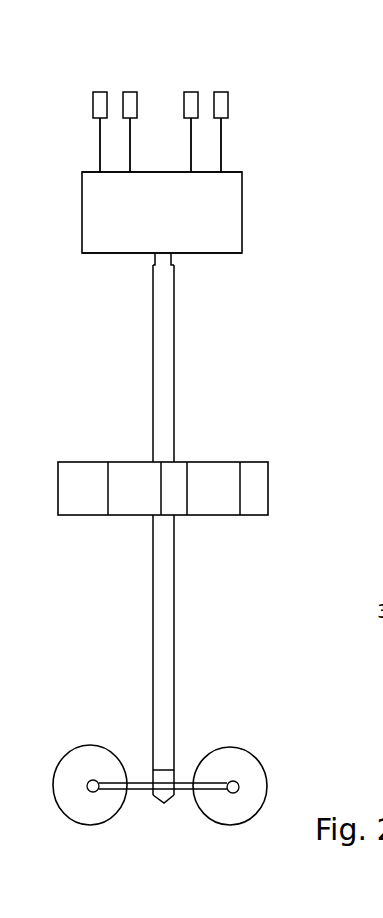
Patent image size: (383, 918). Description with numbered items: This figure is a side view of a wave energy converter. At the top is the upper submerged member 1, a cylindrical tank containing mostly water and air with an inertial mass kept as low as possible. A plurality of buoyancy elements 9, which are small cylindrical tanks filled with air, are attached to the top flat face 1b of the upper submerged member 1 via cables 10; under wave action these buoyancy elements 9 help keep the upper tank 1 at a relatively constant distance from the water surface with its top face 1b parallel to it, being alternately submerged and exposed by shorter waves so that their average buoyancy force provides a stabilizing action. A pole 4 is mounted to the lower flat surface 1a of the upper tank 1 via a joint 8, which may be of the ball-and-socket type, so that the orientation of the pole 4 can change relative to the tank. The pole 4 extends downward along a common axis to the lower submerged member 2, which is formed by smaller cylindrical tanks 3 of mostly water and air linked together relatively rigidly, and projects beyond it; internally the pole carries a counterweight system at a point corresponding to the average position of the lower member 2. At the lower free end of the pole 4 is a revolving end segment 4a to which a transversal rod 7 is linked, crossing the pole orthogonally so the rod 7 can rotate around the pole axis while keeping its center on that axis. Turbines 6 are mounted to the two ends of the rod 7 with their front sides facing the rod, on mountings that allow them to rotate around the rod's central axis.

The upper submerged member 1 is at (78, 217).
The lower flat surface 1a is at (98, 253).
The top flat face 1b is at (92, 172).
The lower submerged member 2 is at (108, 460).
The smaller cylindrical tanks 3 is at (122, 500).
The pole 4 is at (165, 613).
The revolving end segment 4a is at (157, 798).
The turbines 6 is at (90, 757).
The transversal rod 7 is at (185, 788).
The joint 8 is at (165, 255).
The buoyancy elements 9 is at (222, 92).
The cables 10 is at (135, 140).